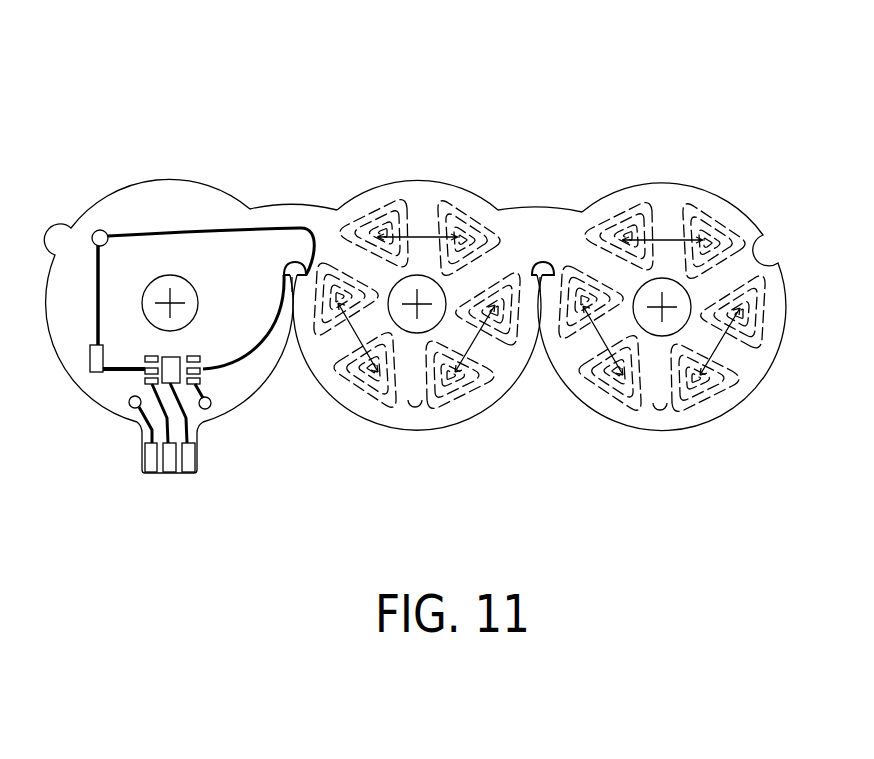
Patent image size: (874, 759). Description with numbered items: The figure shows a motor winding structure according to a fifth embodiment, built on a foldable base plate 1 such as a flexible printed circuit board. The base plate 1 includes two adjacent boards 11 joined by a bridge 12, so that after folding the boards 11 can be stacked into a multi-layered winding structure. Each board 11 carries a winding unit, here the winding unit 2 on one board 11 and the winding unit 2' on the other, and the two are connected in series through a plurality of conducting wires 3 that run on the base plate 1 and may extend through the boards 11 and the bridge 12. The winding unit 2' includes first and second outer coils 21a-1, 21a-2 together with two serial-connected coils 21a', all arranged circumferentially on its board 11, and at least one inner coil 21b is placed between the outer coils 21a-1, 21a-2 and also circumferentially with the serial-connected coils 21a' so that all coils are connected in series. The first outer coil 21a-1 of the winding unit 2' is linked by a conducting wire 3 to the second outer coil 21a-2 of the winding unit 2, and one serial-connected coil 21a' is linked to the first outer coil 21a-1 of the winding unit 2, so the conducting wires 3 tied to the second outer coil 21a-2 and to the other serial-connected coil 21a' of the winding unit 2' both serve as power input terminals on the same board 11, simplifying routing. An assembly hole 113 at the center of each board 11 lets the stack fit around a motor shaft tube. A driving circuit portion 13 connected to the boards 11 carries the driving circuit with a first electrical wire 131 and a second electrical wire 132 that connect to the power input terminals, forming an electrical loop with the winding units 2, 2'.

The base plate 1 is at (275, 92).
The winding unit 2 is at (685, 281).
The winding unit 2' is at (416, 376).
The conducting wire 3 is at (295, 228).
The board 11 is at (425, 187).
The bridge 12 is at (297, 170).
The driving circuit portion 13 is at (180, 185).
The assembly hole 113 is at (687, 302).
The first electrical wire 131 is at (218, 375).
The second electrical wire 132 is at (145, 230).
The serial-connected coil 21a' is at (428, 172).
The first outer coil 21a-1 is at (633, 200).
The second outer coil 21a-2 is at (305, 357).
The inner coil 21b is at (733, 223).